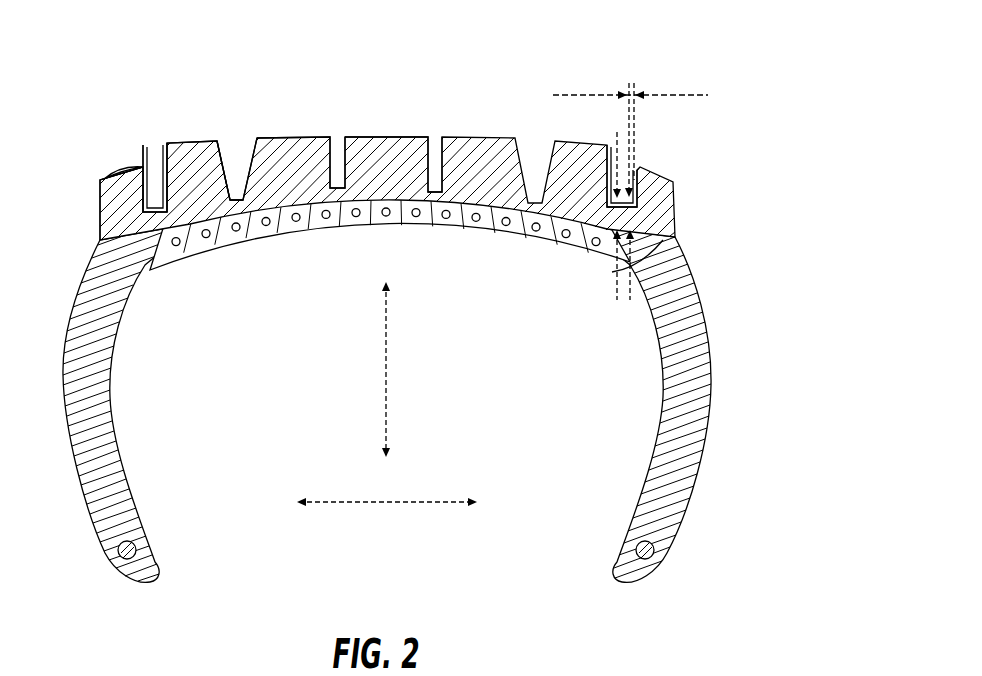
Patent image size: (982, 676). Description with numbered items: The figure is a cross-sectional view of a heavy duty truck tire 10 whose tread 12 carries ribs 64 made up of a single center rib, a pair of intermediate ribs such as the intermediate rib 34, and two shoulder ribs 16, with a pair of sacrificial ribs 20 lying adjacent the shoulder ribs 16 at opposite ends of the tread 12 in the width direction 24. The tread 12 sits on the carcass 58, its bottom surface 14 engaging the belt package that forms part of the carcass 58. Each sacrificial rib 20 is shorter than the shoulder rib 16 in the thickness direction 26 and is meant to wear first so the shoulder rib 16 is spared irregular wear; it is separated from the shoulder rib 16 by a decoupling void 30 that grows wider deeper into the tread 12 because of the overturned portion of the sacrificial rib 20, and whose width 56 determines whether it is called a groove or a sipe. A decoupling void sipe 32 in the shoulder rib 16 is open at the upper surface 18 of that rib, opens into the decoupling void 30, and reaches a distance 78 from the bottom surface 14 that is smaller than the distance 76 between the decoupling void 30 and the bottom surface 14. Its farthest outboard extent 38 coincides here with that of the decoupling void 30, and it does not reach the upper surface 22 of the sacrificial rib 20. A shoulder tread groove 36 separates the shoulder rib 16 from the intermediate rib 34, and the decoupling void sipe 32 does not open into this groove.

The tire 10 is at (746, 45).
The tread 12 is at (661, 173).
The bottom surface 14 is at (390, 258).
The shoulder rib 16 is at (216, 147).
The upper surface 18 is at (179, 138).
The sacrificial rib 20 is at (117, 196).
The upper surface 22 is at (116, 168).
The width direction 24 is at (386, 502).
The thickness direction 26 is at (386, 368).
The decoupling void 30 is at (135, 186).
The decoupling void sipe 32 is at (154, 150).
The intermediate rib 34 is at (293, 142).
The shoulder tread groove 36 is at (241, 157).
The farthest outboard extent 38 is at (118, 234).
The width 56 is at (671, 96).
The carcass 58 is at (594, 248).
The ribs 64 is at (384, 142).
The distance 76 is at (673, 239).
The distance 78 is at (613, 142).